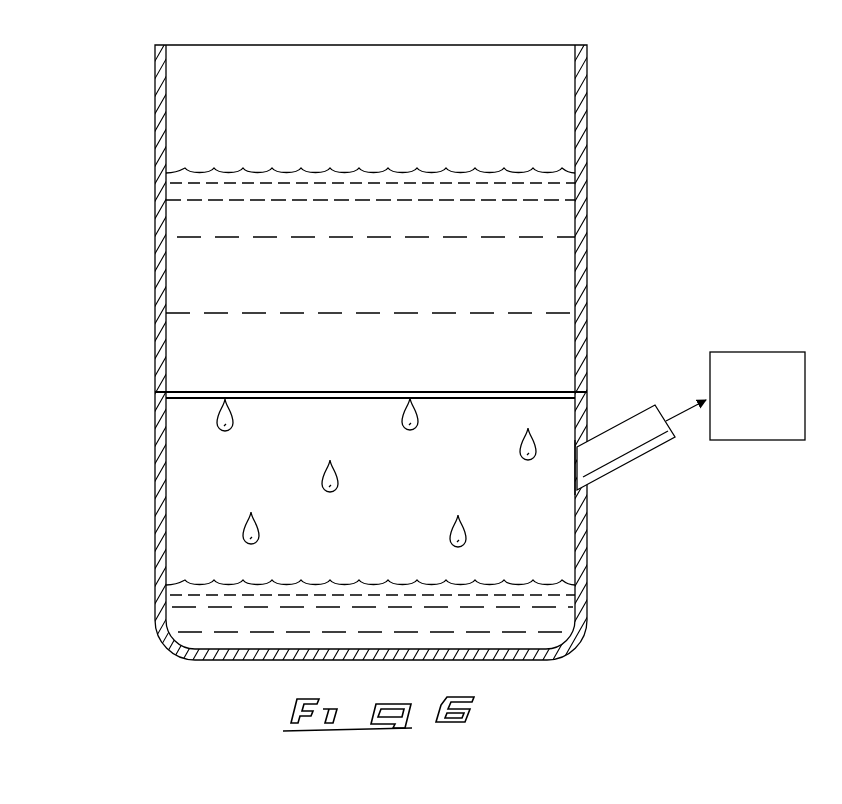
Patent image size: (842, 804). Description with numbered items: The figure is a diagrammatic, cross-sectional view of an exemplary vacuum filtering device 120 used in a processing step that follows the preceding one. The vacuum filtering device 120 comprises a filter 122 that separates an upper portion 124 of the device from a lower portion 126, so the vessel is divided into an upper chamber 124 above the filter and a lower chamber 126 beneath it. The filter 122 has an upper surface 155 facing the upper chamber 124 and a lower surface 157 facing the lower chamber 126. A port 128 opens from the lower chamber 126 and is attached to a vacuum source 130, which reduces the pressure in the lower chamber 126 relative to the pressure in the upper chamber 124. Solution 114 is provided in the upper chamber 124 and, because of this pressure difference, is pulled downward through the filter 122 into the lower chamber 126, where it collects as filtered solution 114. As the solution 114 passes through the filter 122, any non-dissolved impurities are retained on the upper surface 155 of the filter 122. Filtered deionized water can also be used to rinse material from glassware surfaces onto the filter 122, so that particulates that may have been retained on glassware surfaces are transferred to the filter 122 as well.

The vacuum filtering device 120 is at (105, 190).
The upper portion 124 is at (623, 138).
The lower portion 126 is at (131, 472).
The solution 114 is at (543, 284).
The filter 122 is at (336, 400).
The upper surface 155 is at (375, 388).
The lower surface 157 is at (456, 402).
The port 128 is at (640, 428).
The vacuum source 130 is at (780, 410).